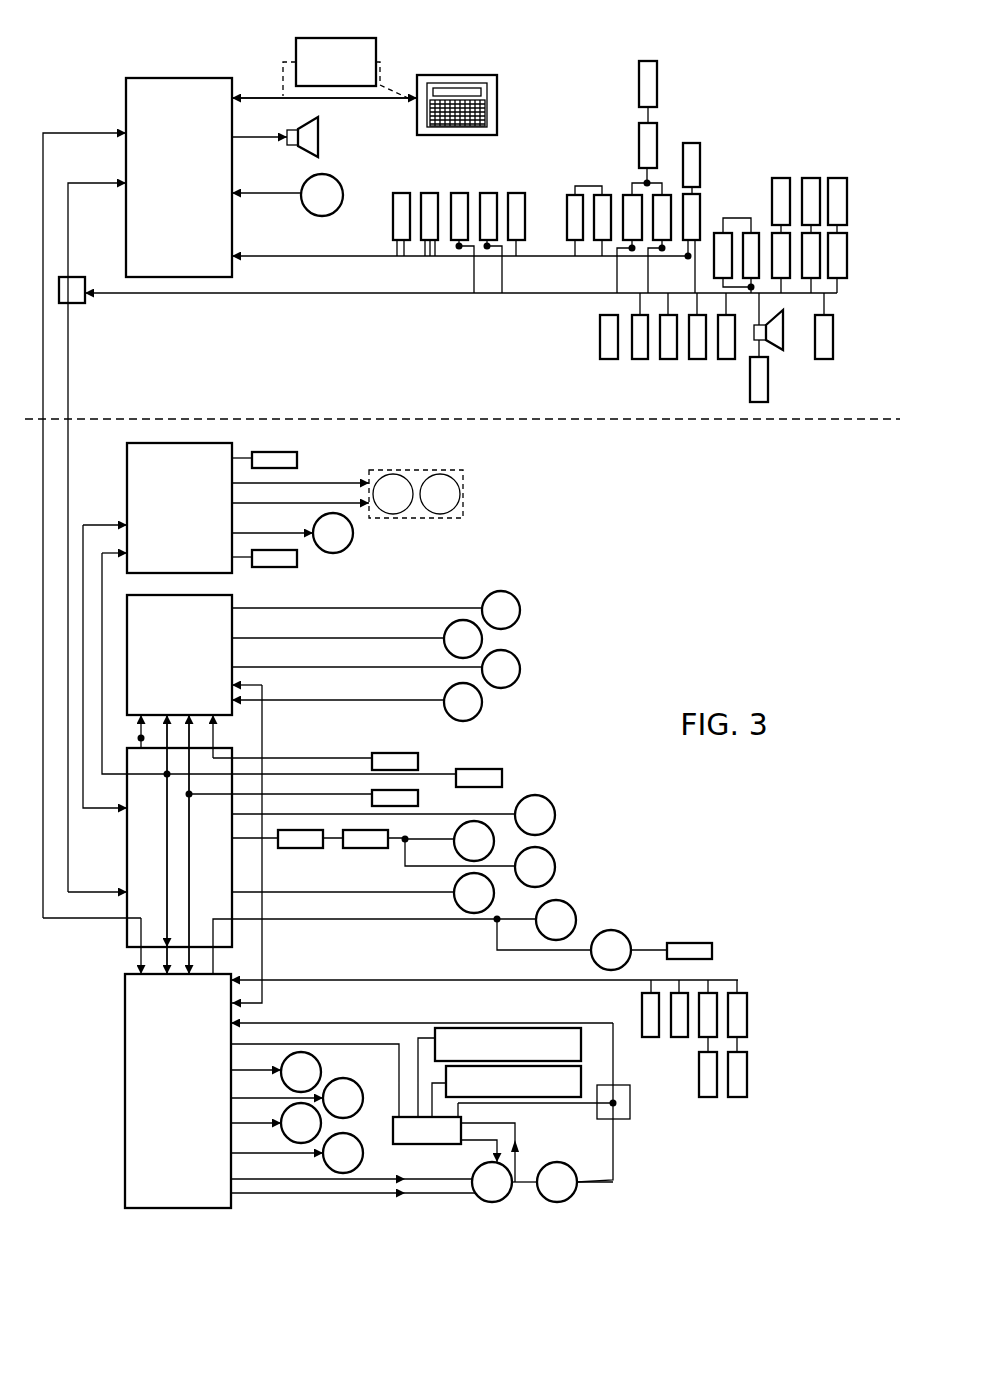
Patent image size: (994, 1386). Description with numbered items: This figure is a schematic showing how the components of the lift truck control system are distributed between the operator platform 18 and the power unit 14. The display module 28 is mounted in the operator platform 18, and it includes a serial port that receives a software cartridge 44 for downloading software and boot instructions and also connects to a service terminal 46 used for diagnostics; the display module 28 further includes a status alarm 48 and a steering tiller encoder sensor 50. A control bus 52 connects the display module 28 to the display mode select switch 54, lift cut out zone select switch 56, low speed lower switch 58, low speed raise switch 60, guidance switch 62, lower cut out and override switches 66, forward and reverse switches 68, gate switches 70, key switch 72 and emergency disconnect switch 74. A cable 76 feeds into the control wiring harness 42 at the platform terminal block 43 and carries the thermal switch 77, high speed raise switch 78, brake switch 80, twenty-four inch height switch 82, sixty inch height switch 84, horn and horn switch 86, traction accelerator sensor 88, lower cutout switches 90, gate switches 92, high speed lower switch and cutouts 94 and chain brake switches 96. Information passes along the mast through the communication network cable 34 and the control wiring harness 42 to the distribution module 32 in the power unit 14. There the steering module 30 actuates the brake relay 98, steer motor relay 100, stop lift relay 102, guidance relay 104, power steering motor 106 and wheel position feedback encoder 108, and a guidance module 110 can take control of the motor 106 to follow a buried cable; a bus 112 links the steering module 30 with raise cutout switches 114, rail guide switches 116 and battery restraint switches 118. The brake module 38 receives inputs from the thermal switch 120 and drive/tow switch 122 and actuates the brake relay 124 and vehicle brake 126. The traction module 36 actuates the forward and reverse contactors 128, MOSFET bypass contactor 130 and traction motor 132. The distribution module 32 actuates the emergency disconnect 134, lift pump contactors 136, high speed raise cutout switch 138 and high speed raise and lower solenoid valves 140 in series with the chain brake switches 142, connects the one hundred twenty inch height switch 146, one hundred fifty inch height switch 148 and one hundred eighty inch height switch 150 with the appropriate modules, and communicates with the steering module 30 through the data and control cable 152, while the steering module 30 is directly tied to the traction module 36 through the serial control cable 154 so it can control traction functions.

The power unit 14 is at (606, 497).
The operator platform 18 is at (422, 355).
The display module 28 is at (156, 78).
The steering module 30 is at (157, 1048).
The distribution module 32 is at (146, 865).
The communication network cable 34 is at (85, 133).
The traction module 36 is at (166, 637).
The brake module 38 is at (166, 490).
The control wiring harness 42 is at (68, 362).
The platform terminal block 43 is at (85, 303).
The software cartridge 44 is at (362, 38).
The service terminal 46 is at (445, 75).
The status alarm 48 is at (320, 137).
The steering tiller encoder sensor 50 is at (335, 185).
The control bus 52 is at (298, 256).
The display mode select switch 54 is at (393, 215).
The lift cut out zone select switch 56 is at (432, 195).
The low speed lower switch 58 is at (458, 195).
The low speed raise switch 60 is at (488, 195).
The guidance switch 62 is at (525, 205).
The lower cut out and override switches 66 is at (600, 200).
The forward and reverse switches 68 is at (664, 232).
The gate switches 70 is at (650, 140).
The key switch 72 is at (700, 205).
The emergency disconnect switch 74 is at (690, 150).
The cable 76 is at (292, 293).
The thermal switch 77 is at (600, 345).
The high speed raise switch 78 is at (640, 345).
The brake switch 80 is at (668, 345).
The 24" height switch 82 is at (700, 345).
The 60" height switch 84 is at (728, 345).
The horn and horn switch 86 is at (768, 378).
The traction accelerator sensor 88 is at (833, 340).
The lower cutout switches 90 is at (752, 240).
The gate switches 92 is at (786, 245).
The high speed lower switch and high speed lower switch cutouts 94 is at (818, 245).
The chain brake switches 96 is at (845, 250).
The brake relay 98 is at (318, 1060).
The steer motor relay 100 is at (362, 1095).
The stop lift relay 102 is at (297, 1140).
The guidance relay 104 is at (353, 1157).
The power steering motor 106 is at (492, 1202).
The wheel position feedback encoder 108 is at (560, 1165).
The guidance module 110 is at (442, 1147).
The bus 112 is at (373, 980).
The raise cutout switches 114 is at (680, 1025).
The rail guide switches 116 is at (710, 1085).
The battery restraint switches 118 is at (743, 1010).
The thermal switch 120 is at (288, 452).
The drive/tow switch 122 is at (295, 562).
The brake relay 124 is at (345, 527).
The vehicle brake 126 is at (463, 478).
The forward and reverse contactors 128 is at (493, 641).
The MOSFET bypass contactor 130 is at (507, 672).
The traction motor 132 is at (482, 700).
The emergency disconnect 134 is at (545, 797).
The lift pump contactors 136 is at (575, 918).
The high speed raise cutout switch 138 is at (690, 943).
The high speed raise and lower solenoid valves 140 is at (555, 860).
The chain brake switches 142 is at (300, 848).
The 120" height switch 146 is at (478, 769).
The 150" height switch 148 is at (395, 753).
The 180" height switch 150 is at (418, 796).
The data and control cable 152 is at (165, 960).
The RS 232 control cable 154 is at (262, 745).